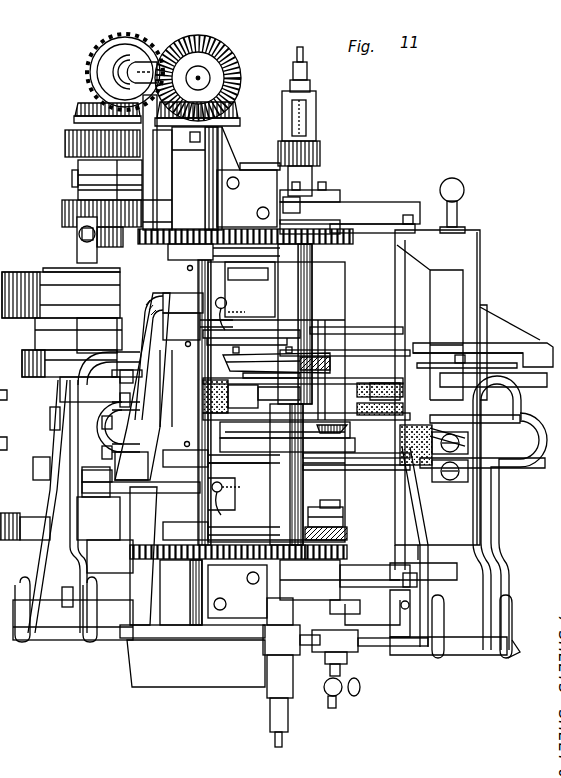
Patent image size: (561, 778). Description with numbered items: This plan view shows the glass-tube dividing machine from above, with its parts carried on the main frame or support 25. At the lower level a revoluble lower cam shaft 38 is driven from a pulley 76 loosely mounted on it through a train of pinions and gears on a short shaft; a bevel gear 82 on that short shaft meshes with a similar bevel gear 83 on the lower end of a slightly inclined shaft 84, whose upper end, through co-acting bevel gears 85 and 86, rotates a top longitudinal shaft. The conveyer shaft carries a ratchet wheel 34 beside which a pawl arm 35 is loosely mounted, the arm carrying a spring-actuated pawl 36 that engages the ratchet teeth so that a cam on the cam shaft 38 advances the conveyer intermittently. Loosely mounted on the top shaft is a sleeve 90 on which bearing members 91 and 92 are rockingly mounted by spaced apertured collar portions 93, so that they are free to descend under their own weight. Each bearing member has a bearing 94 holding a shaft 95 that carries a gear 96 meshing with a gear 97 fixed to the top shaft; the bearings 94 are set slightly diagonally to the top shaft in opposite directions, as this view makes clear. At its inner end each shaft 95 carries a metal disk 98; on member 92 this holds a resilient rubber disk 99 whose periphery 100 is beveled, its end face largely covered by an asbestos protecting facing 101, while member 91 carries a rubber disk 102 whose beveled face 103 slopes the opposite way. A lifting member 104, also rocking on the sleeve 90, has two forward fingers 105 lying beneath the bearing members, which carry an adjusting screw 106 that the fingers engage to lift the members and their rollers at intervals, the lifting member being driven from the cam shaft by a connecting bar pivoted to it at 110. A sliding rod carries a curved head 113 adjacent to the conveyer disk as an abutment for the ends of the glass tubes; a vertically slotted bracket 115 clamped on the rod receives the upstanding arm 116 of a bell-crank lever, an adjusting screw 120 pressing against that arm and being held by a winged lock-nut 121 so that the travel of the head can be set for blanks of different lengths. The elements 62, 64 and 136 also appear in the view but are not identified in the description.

The main frame 25 is at (358, 208).
The ratchet wheel 34 is at (308, 514).
The pawl arm 35 is at (305, 532).
The spring-actuated pawl 36 is at (340, 505).
The lower cam shaft 38 is at (80, 345).
The frame column 62 is at (478, 268).
The shelf bracket 64 is at (540, 343).
The pulley 76 is at (22, 272).
The bevel gear 82 is at (82, 108).
The bevel gear 83 is at (135, 42).
The inclined shaft 84 is at (200, 78).
The bevel gear 85 is at (210, 36).
The bevel gear 86 is at (232, 118).
The sleeve 90 is at (190, 275).
The bearing member 91 is at (248, 277).
The bearing member 92 is at (230, 494).
The collar portions 93 is at (168, 251).
The bearing 94 is at (312, 280).
The shaft 95 is at (298, 232).
The gear 96 is at (350, 242).
The gear 97 is at (208, 180).
The metal disk 98 is at (300, 360).
The resilient disk 99 is at (350, 360).
The beveled periphery 100 is at (340, 378).
The asbestos protecting facing 101 is at (330, 385).
The rubber disk 102 is at (320, 438).
The beveled face 103 is at (365, 482).
The lifting member 104 is at (132, 465).
The fingers 105 is at (249, 394).
The adjusting screw 106 is at (230, 303).
The pivot 110 is at (95, 485).
The curved head 113 is at (340, 327).
The slotted bracket 115 is at (316, 105).
The upstanding arm 116 is at (305, 120).
The adjusting screw 120 is at (308, 66).
The winged lock-nut 121 is at (311, 86).
The plate 136 is at (355, 428).